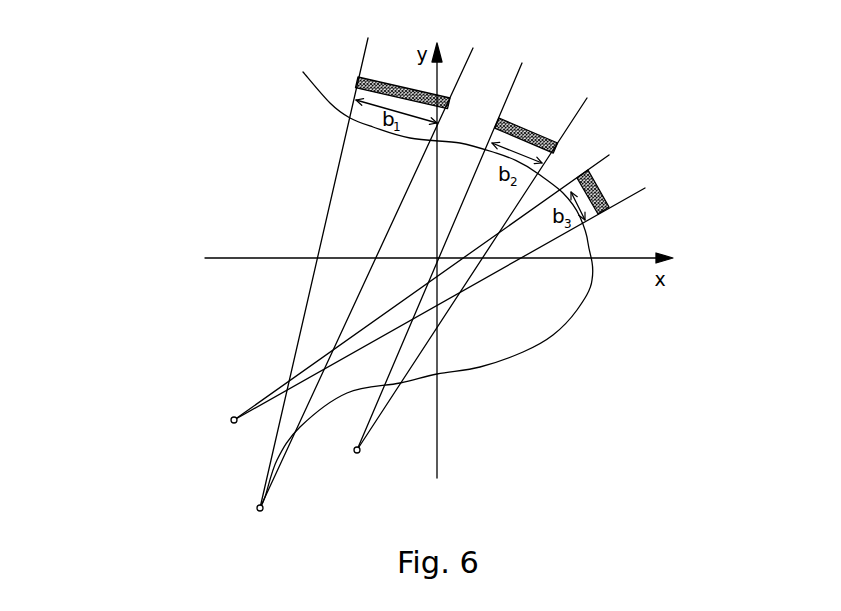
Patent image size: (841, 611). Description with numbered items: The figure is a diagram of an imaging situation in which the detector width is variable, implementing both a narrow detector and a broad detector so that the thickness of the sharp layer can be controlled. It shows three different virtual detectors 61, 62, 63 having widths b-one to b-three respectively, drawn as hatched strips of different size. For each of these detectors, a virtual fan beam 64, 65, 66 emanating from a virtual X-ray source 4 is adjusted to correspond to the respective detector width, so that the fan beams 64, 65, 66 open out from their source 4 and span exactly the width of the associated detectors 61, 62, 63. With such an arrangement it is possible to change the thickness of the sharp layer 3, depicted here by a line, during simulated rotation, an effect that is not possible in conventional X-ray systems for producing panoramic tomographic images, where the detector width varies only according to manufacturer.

The sharp layer 3 is at (550, 338).
The virtual X-ray source 4 is at (232, 423).
The first virtual detector 61 is at (395, 80).
The second virtual detector 62 is at (530, 130).
The third virtual detector 63 is at (606, 203).
The first virtual fan beam 64 is at (343, 190).
The second virtual fan beam 65 is at (516, 199).
The third virtual fan beam 66 is at (543, 234).